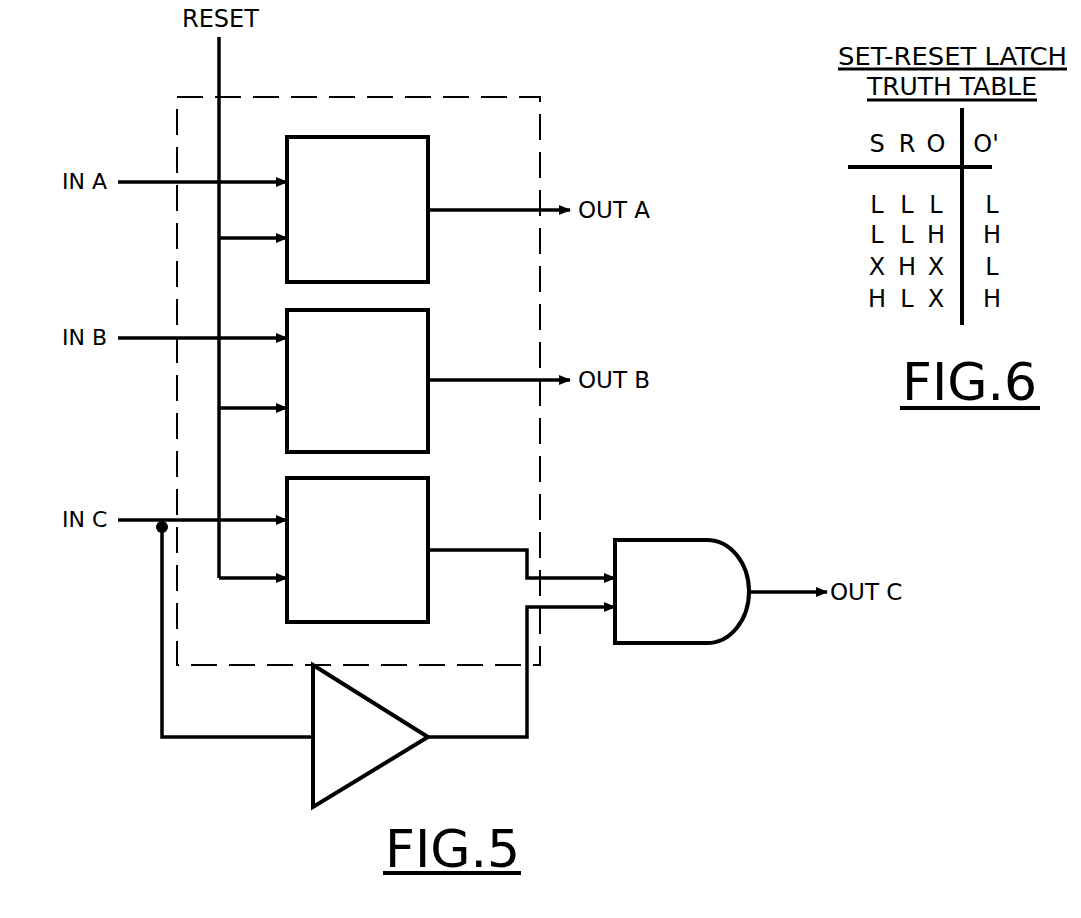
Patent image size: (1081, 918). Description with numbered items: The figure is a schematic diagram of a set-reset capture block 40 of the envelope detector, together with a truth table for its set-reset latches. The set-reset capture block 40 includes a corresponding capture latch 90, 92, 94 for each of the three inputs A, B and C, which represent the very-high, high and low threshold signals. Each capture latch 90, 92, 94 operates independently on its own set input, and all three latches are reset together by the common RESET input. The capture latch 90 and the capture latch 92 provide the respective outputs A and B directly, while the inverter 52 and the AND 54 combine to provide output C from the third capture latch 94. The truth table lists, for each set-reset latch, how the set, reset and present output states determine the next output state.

The latch circuit block 40 is at (404, 73).
The set-reset latch A 90 is at (357, 209).
The set-reset latch B 92 is at (357, 381).
The set-reset latch C 94 is at (357, 550).
The buffer 52 is at (370, 736).
The AND gate 54 is at (682, 591).